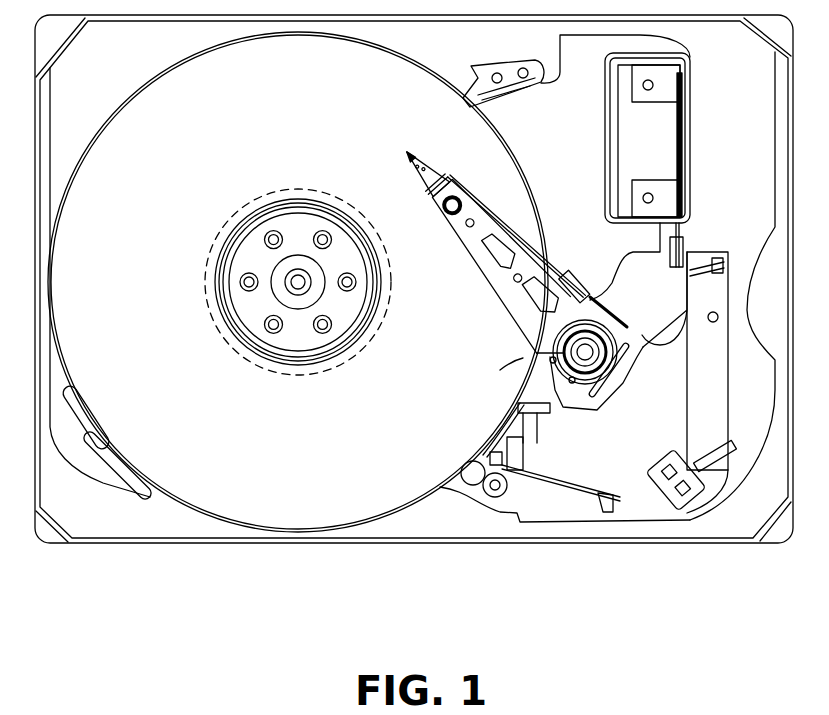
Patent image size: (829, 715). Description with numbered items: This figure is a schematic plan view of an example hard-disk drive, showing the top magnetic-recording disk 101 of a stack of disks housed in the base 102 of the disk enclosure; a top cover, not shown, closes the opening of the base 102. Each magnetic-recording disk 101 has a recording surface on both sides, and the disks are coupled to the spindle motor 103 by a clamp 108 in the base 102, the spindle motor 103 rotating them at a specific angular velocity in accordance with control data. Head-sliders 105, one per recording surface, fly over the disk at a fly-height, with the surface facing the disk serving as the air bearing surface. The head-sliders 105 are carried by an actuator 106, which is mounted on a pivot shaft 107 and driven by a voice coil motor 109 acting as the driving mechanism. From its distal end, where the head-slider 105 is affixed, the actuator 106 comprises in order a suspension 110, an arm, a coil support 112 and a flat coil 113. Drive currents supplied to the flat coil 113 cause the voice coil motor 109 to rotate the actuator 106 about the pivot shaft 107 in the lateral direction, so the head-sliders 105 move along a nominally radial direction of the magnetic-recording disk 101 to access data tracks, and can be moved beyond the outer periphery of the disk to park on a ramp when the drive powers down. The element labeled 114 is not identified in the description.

The magnetic-recording disk 101 is at (506, 156).
The base 102 is at (352, 543).
The spindle motor 103 is at (280, 375).
The head-slider 105 is at (420, 158).
The actuator 106 is at (458, 253).
The pivot shaft 107 is at (520, 358).
The clamp 108 is at (222, 315).
The voice coil motor 109 is at (567, 487).
The suspension 110 is at (432, 188).
The coil support 112 is at (518, 312).
The flat coil 113 is at (652, 328).
The connector 114 is at (633, 405).